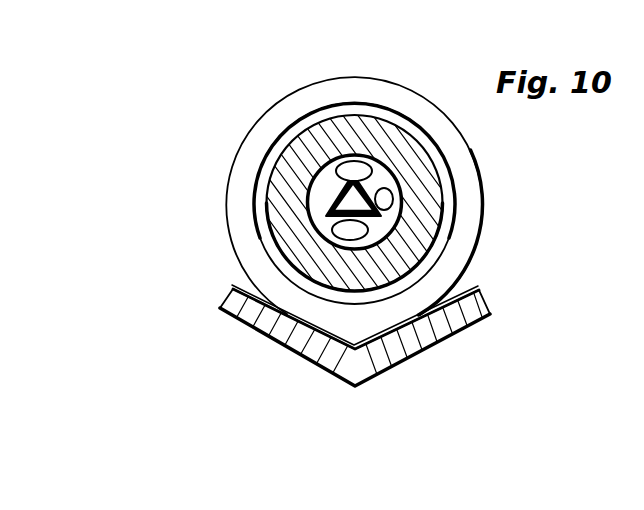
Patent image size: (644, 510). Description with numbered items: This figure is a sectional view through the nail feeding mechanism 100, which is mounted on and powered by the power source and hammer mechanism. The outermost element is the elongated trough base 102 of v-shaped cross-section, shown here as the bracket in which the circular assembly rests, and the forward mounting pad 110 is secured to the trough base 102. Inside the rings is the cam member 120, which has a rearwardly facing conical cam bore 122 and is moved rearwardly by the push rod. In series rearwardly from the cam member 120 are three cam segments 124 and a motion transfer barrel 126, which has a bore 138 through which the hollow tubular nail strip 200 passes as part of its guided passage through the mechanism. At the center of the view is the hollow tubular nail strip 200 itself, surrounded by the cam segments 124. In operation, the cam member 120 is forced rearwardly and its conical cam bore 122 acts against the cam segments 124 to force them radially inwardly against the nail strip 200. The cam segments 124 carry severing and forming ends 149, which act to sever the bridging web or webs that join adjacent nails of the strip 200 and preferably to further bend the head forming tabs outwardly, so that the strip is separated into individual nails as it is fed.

The nail feeding mechanism 100 is at (350, 200).
The trough base 102 is at (349, 338).
The forward mounting pad 110 is at (355, 342).
The cam member 120 is at (389, 196).
The conical cam bore 122 is at (400, 122).
The cam segments 124 is at (385, 217).
The motion transfer barrel 126 is at (382, 200).
The bore 138 is at (432, 219).
The severing and forming ends 149 is at (343, 237).
The hollow tubular nail strip 200 is at (354, 176).